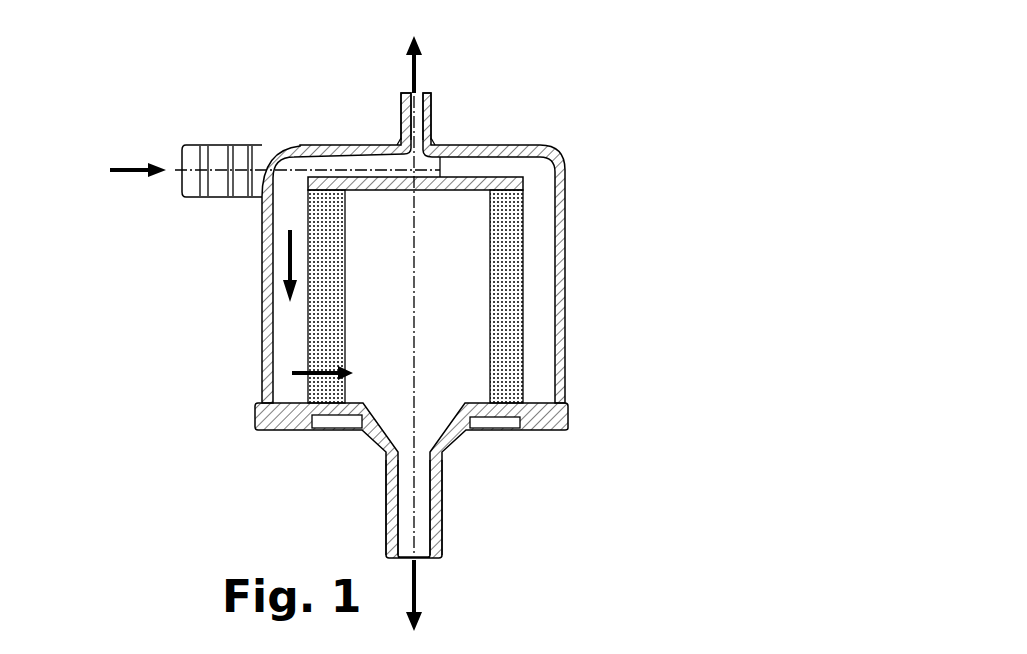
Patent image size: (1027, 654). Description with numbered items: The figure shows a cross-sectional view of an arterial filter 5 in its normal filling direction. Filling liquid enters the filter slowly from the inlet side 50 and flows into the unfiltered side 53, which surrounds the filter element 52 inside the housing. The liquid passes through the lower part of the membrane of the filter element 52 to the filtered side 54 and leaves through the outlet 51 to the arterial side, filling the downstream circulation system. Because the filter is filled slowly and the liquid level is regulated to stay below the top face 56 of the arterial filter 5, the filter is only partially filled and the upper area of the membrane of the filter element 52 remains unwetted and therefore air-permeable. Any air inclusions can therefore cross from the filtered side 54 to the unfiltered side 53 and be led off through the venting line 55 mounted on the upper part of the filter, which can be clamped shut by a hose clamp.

The arterial filter 5 is at (117, 110).
The inlet side 50 is at (205, 160).
The outlet 51 is at (420, 508).
The filter element 52 is at (500, 240).
The unfiltered side 53 is at (537, 305).
The filtered side 54 is at (446, 355).
The venting line 55 is at (427, 98).
The top face 56 is at (548, 138).